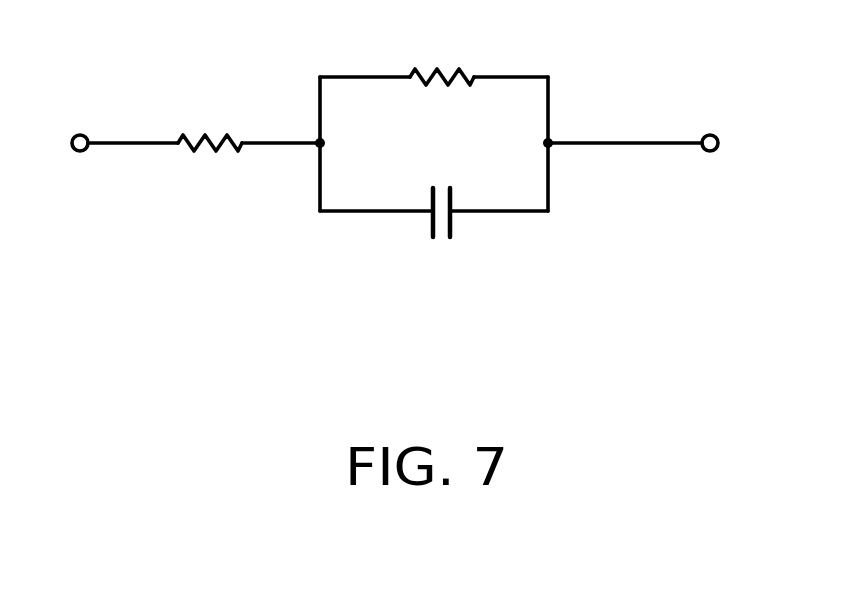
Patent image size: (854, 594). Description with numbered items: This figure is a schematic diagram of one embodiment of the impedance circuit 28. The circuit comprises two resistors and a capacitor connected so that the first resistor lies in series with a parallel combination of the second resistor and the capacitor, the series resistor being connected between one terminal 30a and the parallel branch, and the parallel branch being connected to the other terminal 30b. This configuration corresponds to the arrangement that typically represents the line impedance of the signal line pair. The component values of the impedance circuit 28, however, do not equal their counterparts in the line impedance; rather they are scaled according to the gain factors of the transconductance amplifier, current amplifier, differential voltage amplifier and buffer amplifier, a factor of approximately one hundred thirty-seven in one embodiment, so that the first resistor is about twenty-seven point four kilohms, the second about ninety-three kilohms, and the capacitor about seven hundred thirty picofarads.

The impedance circuit 28 is at (241, 338).
The first terminal 30a is at (80, 152).
The second terminal 30b is at (710, 152).